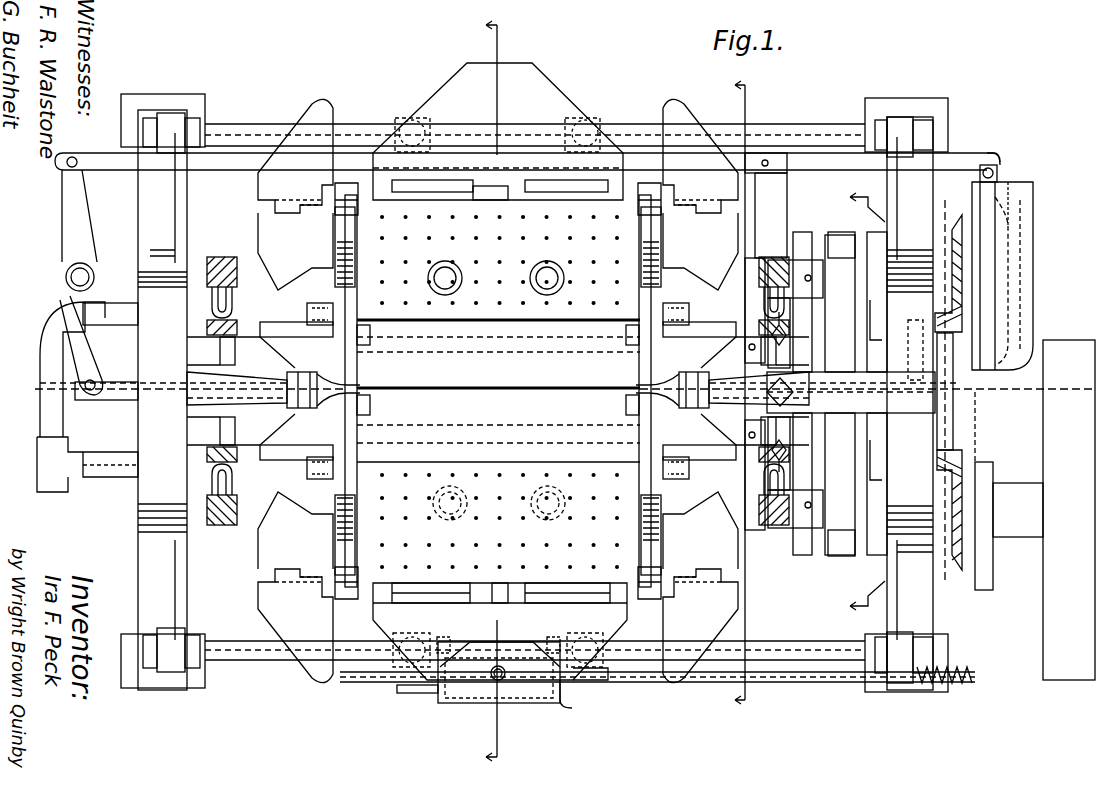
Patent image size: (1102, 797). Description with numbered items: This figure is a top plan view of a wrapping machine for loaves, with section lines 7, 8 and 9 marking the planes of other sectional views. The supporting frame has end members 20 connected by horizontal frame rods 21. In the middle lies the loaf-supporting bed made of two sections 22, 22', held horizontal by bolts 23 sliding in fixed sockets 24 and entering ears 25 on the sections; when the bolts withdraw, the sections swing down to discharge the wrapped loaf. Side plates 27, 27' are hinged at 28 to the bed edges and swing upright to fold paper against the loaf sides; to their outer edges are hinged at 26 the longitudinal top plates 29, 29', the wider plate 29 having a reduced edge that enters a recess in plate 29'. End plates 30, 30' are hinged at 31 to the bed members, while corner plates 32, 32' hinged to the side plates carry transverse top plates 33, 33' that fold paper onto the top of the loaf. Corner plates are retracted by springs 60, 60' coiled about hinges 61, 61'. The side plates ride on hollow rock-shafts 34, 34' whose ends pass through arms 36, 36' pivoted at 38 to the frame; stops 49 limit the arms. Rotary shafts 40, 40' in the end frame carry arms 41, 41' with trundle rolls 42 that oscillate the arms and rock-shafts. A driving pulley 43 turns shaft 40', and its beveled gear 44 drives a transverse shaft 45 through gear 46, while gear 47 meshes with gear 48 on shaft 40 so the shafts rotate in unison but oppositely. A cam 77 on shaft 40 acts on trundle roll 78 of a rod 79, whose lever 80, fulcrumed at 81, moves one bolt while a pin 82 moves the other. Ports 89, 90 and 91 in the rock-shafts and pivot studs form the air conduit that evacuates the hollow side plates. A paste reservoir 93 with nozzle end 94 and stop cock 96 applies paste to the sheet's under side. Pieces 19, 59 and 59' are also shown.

The section line 7- 7 is at (867, 403).
The section line 8- 8 is at (745, 396).
The section line 9- 9 is at (496, 385).
The pawl 19 is at (790, 322).
The end member 20 is at (535, 400).
The horizontal frame rod 21 is at (242, 146).
The bed section 22 is at (498, 354).
The bed section 22' is at (498, 428).
The bolt 23 is at (250, 383).
The fixed socket 24 is at (222, 403).
The ear 25 is at (310, 408).
The hinge 26 is at (498, 396).
The side plate 27 is at (499, 260).
The side plate 27' is at (499, 521).
The hinge 28 is at (307, 310).
The longitudinal top plate 29 is at (498, 131).
The longitudinal top plate 29' is at (500, 631).
The end plate 30 is at (498, 328).
The end plate 30' is at (498, 444).
The hinge 31 is at (608, 379).
The corner plate 32 is at (295, 251).
The corner plate 32' is at (498, 391).
The transverse top plate 33 is at (295, 154).
The transverse top plate 33' is at (498, 390).
The rock-shaft 34 is at (498, 313).
The rock-shaft 34' is at (498, 449).
The arm 36 is at (509, 339).
The arm 36' is at (224, 522).
The pivot 38 is at (832, 502).
The rotary shaft 40 is at (1016, 276).
The rotary shaft 40' is at (1032, 470).
The arm 41 is at (840, 391).
The arm 41' is at (895, 396).
The trundle roll 42 is at (851, 413).
The driving pulley 43 is at (1043, 404).
The beveled gear 44 is at (984, 462).
The transverse shaft 45 is at (953, 392).
The gear 46 is at (958, 450).
The gear 47 is at (916, 324).
The gear 48 is at (957, 232).
The stop 49 is at (790, 460).
The stop 59 is at (843, 235).
The stop 59' is at (847, 552).
The spring 60 is at (515, 261).
The adjusting screw 60' is at (519, 517).
The hinge 61 is at (510, 247).
The screw sleeve 61' is at (515, 535).
The cam 77 is at (1017, 187).
The trundle roll 78 is at (1000, 160).
The rod 79 is at (978, 162).
The lever 80 is at (78, 217).
The fulcrum 81 is at (66, 280).
The pin 82 is at (52, 392).
The port 89 is at (462, 270).
The port 90 is at (212, 290).
The port 91 is at (207, 310).
The paste reservoir 93 is at (575, 694).
The nozzle end 94 is at (503, 680).
The stop cock 96 is at (610, 678).